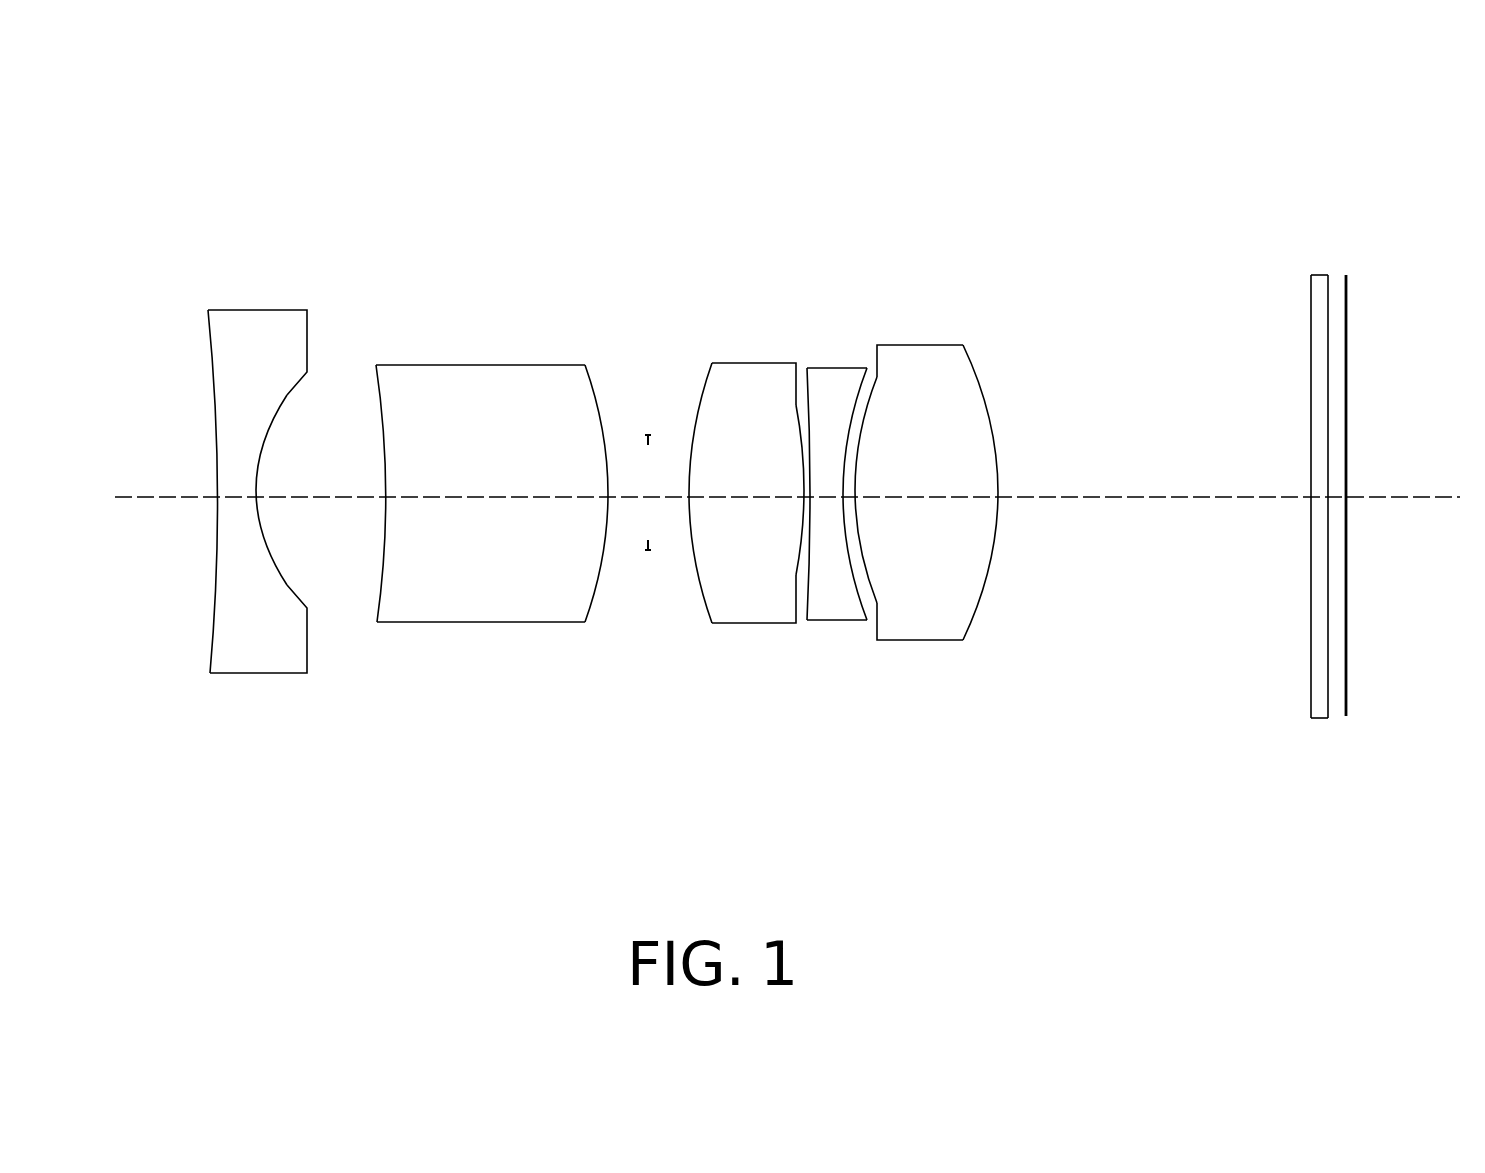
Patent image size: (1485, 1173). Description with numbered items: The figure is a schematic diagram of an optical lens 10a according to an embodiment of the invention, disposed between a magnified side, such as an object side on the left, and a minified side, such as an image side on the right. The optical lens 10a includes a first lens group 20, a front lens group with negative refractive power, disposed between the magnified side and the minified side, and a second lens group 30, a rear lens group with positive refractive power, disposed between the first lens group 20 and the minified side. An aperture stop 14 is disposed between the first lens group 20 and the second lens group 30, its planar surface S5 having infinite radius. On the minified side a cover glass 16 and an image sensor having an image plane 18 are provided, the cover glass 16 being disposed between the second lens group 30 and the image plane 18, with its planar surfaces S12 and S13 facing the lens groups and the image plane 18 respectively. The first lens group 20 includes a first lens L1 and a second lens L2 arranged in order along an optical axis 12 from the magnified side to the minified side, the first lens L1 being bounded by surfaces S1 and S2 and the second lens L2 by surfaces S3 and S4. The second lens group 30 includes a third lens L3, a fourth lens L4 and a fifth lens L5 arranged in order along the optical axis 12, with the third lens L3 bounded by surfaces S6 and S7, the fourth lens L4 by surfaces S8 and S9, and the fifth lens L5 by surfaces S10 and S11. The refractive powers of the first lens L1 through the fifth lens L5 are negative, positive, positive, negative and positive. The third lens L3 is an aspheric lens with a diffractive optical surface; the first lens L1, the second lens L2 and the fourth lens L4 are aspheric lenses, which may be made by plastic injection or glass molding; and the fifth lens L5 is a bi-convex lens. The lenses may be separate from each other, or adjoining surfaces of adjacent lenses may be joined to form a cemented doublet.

The optical lens 10a is at (185, 95).
The optical axis 12 is at (1398, 495).
The aperture stop 14 is at (650, 430).
The cover glass 16 is at (1317, 275).
The image plane 18 is at (1343, 275).
The first lens group 20 is at (577, 245).
The second lens group 30 is at (1040, 245).
The first lens L1 is at (255, 338).
The second lens L2 is at (463, 387).
The third lens L3 is at (735, 378).
The fourth lens L4 is at (837, 378).
The fifth lens L5 is at (910, 368).
The surface S1 is at (211, 643).
The surface S2 is at (288, 585).
The surface S3 is at (383, 563).
The surface S4 is at (598, 578).
The surface S5 is at (647, 552).
The surface S6 is at (702, 595).
The surface S7 is at (795, 577).
The surface S8 is at (807, 613).
The surface S9 is at (857, 590).
The surface S10 is at (870, 600).
The surface S11 is at (980, 605).
The surface S12 is at (1312, 583).
The surface S13 is at (1329, 632).